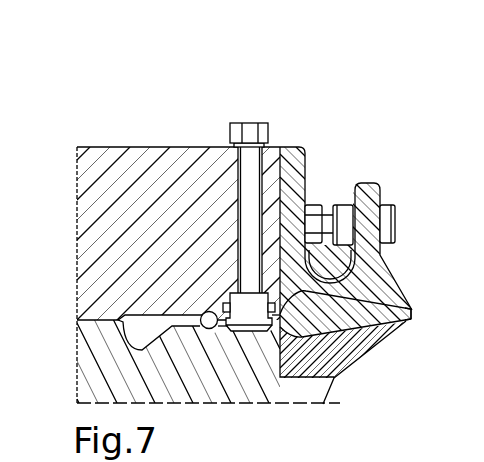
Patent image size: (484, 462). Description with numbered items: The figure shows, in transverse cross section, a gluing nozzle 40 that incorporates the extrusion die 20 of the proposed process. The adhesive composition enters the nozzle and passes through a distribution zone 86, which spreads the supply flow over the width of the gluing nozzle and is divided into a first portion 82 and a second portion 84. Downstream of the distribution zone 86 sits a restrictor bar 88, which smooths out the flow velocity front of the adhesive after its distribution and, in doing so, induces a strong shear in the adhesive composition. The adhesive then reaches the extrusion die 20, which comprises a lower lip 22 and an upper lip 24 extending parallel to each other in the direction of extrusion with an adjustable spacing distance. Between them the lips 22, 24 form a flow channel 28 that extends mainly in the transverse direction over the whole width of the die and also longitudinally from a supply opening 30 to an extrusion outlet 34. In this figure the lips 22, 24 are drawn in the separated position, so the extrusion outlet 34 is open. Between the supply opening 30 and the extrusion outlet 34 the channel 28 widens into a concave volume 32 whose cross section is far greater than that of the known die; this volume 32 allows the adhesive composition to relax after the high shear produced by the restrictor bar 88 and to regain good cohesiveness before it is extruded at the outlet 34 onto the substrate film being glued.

The extrusion die 20 is at (332, 103).
The lower lip 22 is at (352, 376).
The upper lip 24 is at (382, 320).
The flow channel 28 is at (366, 213).
The supply opening 30 is at (287, 320).
The concave volume 32 is at (331, 318).
The extrusion outlet 34 is at (414, 317).
The gluing nozzle 40 is at (257, 98).
The first portion 82 is at (140, 328).
The second portion 84 is at (203, 313).
The distribution zone 86 is at (155, 191).
The restrictor bar 88 is at (232, 303).